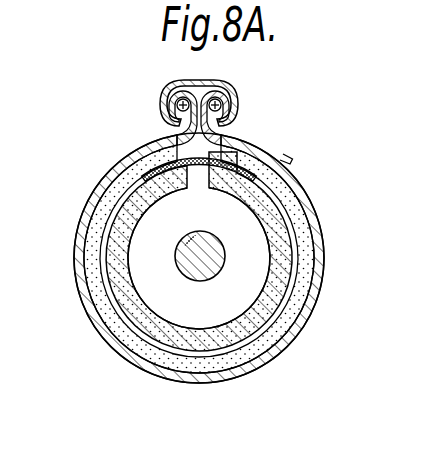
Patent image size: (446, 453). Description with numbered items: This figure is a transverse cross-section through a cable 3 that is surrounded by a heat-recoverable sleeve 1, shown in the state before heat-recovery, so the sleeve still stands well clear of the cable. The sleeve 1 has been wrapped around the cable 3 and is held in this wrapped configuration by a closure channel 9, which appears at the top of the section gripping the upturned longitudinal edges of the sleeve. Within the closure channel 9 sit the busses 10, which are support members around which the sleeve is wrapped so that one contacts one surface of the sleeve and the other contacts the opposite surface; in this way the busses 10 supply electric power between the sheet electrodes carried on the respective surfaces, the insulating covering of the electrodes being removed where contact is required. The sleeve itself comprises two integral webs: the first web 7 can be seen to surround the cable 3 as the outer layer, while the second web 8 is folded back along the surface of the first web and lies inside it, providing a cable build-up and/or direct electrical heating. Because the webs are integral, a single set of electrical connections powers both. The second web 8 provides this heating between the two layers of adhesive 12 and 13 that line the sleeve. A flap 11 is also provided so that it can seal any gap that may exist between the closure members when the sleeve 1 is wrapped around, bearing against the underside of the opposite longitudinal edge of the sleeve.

The sleeve 1 is at (334, 227).
The cable 3 is at (211, 262).
The first web 7 is at (78, 280).
The second web 8 is at (111, 221).
The closure channel 9 is at (161, 100).
The busses 10 is at (238, 100).
The flap 11 is at (163, 156).
The layer of adhesive 12 is at (94, 244).
The layer of adhesive 13 is at (126, 303).